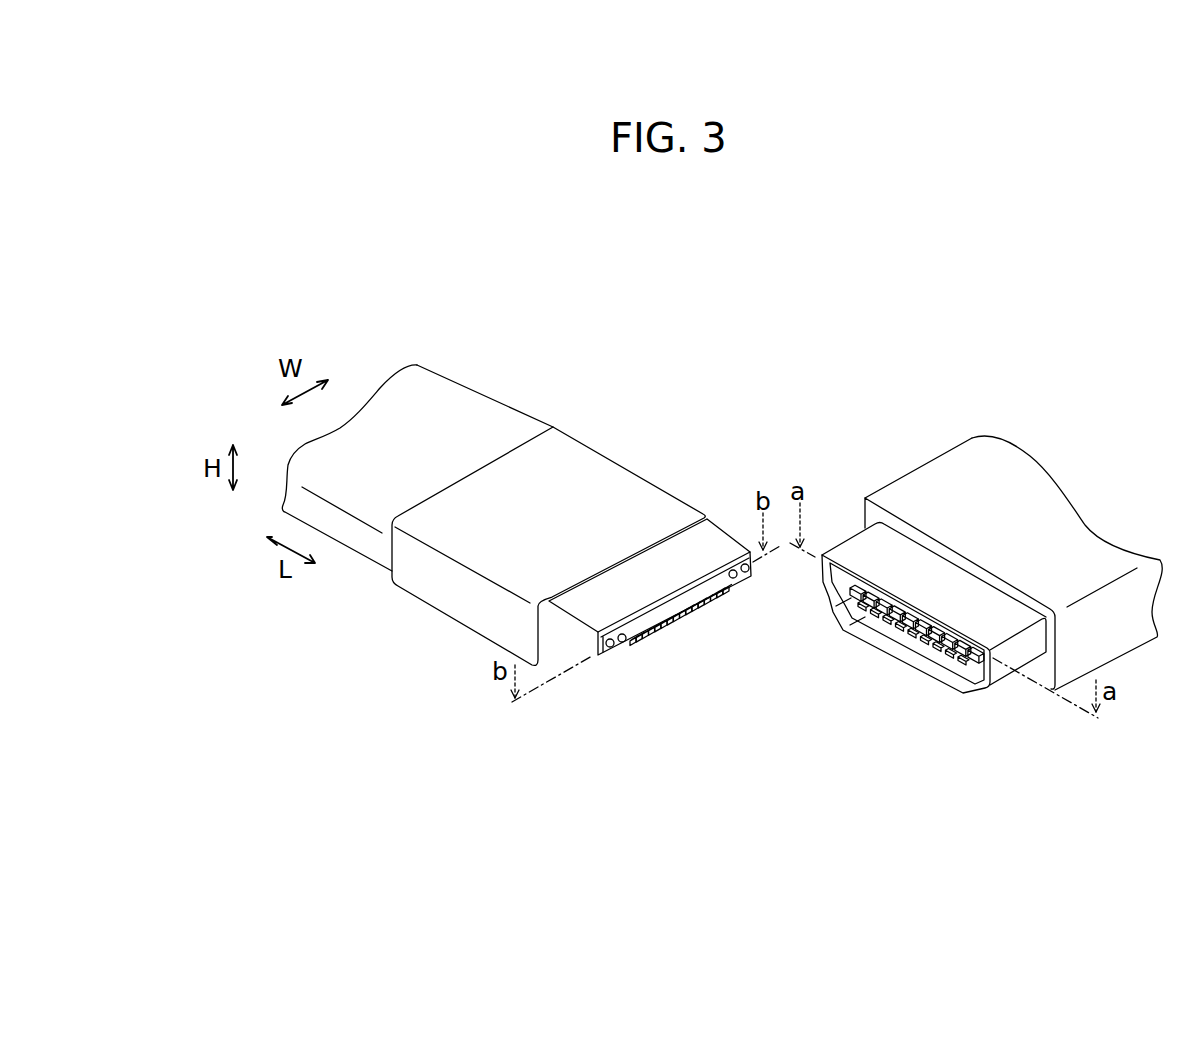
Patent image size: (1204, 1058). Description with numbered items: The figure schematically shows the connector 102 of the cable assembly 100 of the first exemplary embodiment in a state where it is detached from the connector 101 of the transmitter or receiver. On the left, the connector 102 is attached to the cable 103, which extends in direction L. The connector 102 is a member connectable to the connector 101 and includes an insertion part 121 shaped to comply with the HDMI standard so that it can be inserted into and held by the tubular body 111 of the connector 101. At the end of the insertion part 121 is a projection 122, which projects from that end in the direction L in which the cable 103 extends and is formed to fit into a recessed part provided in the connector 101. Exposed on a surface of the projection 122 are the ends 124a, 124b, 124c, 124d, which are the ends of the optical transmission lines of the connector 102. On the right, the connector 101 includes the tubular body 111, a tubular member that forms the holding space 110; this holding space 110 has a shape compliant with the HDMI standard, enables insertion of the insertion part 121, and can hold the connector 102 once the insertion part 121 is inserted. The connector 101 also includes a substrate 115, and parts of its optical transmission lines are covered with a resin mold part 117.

The cable assembly 100 is at (589, 364).
The connector 101 is at (953, 470).
The connector 102 is at (598, 477).
The cable 103 is at (458, 403).
The holding space 110 is at (915, 647).
The tubular body 111 is at (973, 600).
The substrate 115 is at (857, 581).
The resin mold part 117 is at (1120, 633).
The insertion part 121 is at (708, 540).
The projection 122 is at (652, 618).
The end 124a is at (745, 572).
The end 124b is at (733, 578).
The end 124c is at (618, 653).
The end 124d is at (605, 653).